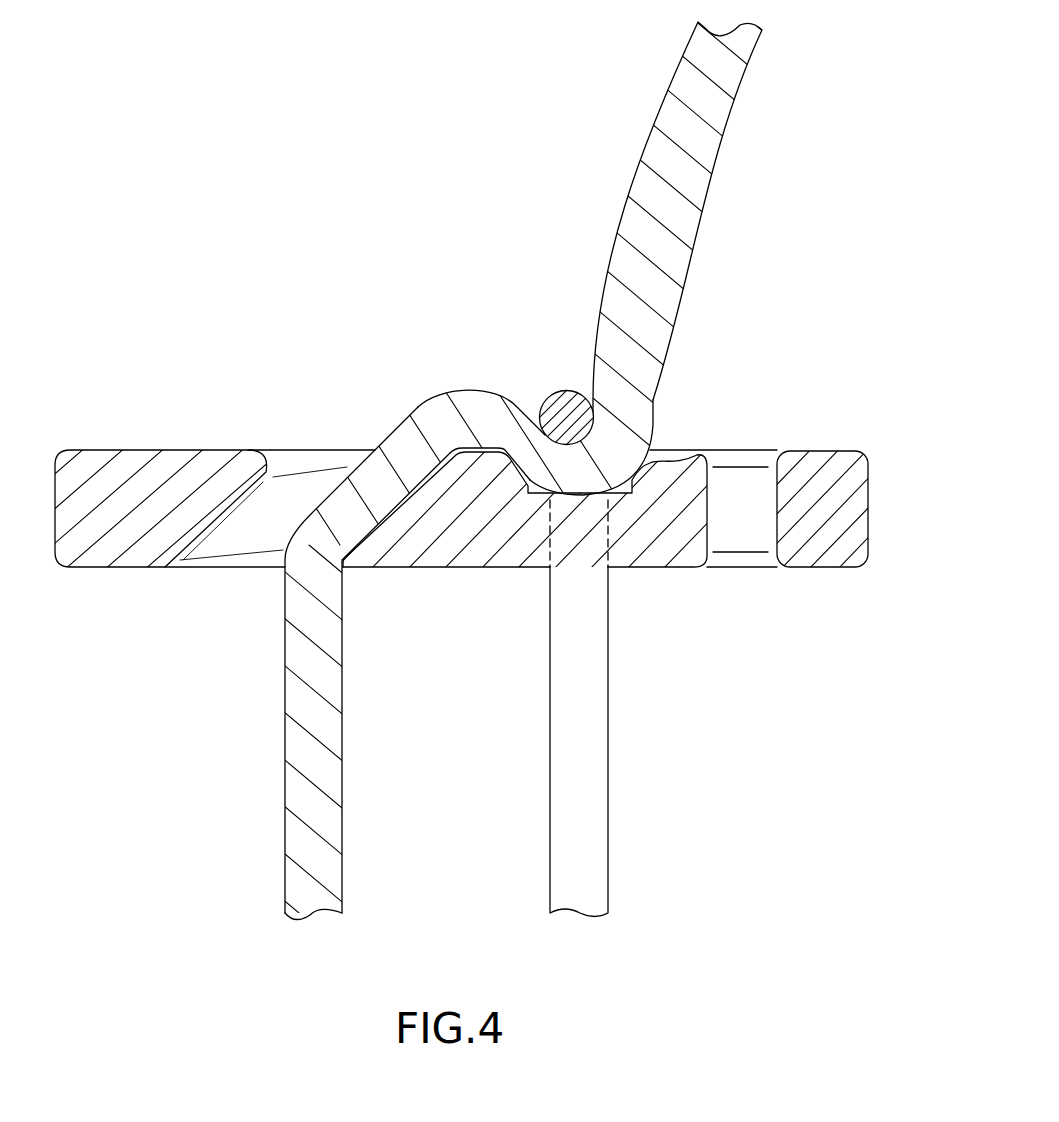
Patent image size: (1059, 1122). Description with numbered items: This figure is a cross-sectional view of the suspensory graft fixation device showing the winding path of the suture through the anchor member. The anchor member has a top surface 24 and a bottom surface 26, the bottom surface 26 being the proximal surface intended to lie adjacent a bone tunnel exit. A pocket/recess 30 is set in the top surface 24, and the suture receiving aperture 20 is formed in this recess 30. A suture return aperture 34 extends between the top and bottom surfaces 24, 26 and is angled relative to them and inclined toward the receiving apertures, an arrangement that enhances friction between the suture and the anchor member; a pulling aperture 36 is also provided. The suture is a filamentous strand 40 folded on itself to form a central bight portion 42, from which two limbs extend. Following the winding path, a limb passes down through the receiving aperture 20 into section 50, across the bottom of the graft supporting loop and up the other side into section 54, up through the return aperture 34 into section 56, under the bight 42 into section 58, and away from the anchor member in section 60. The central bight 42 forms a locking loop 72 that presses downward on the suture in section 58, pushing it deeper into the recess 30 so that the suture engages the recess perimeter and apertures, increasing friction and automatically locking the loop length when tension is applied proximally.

The suture receiving aperture 20 is at (588, 550).
The top surface 24 is at (128, 450).
The bottom surface 26 is at (102, 568).
The pocket/recess 30 is at (686, 462).
The suture return aperture 34 is at (202, 550).
The pulling aperture 36 is at (767, 543).
The filamentous strand 40 is at (675, 261).
The central bight portion 42 is at (566, 391).
The section 50 is at (682, 913).
The section 54 is at (233, 913).
The section 56 is at (368, 477).
The section 58 is at (547, 470).
The section 60 is at (657, 389).
The locking loop 72 is at (541, 404).